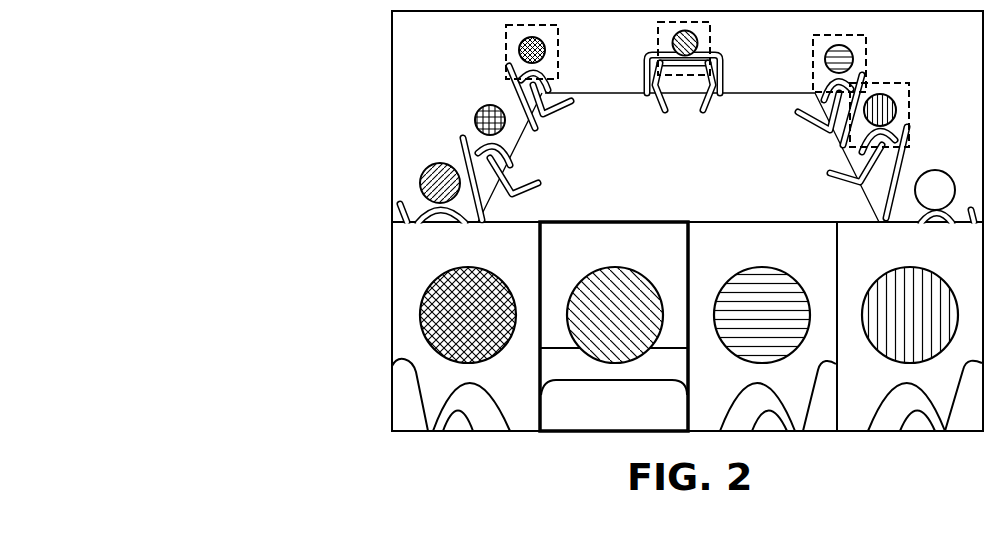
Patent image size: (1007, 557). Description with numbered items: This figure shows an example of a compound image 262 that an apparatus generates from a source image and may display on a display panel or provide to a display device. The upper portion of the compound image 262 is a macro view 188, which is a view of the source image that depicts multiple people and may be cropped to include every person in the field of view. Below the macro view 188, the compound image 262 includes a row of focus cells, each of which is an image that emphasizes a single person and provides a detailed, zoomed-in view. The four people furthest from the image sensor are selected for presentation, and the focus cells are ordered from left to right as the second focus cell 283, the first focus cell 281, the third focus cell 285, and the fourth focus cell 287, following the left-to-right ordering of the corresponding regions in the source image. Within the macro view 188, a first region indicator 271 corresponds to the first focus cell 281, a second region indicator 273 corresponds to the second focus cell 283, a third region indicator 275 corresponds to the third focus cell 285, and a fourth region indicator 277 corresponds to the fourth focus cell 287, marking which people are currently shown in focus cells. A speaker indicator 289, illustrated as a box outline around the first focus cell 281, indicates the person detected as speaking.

The compound image 262 is at (297, 12).
The macro view 188 is at (387, 220).
The first region indicator 271 is at (710, 43).
The second region indicator 273 is at (558, 47).
The third region indicator 275 is at (866, 45).
The fourth region indicator 277 is at (909, 100).
The first focus cell 281 is at (640, 434).
The second focus cell 283 is at (488, 434).
The third focus cell 285 is at (742, 434).
The fourth focus cell 287 is at (888, 434).
The speaker indicator 289 is at (542, 247).